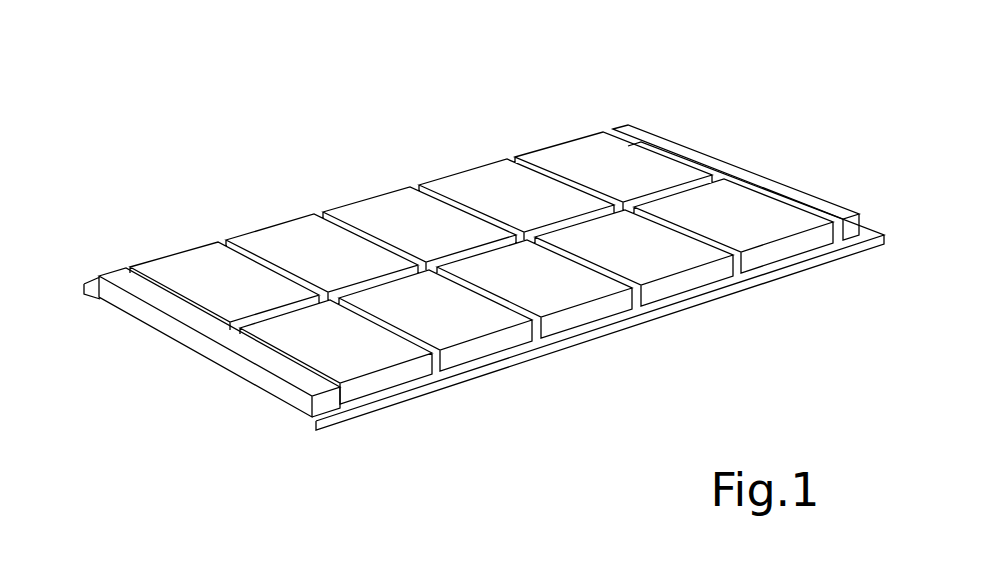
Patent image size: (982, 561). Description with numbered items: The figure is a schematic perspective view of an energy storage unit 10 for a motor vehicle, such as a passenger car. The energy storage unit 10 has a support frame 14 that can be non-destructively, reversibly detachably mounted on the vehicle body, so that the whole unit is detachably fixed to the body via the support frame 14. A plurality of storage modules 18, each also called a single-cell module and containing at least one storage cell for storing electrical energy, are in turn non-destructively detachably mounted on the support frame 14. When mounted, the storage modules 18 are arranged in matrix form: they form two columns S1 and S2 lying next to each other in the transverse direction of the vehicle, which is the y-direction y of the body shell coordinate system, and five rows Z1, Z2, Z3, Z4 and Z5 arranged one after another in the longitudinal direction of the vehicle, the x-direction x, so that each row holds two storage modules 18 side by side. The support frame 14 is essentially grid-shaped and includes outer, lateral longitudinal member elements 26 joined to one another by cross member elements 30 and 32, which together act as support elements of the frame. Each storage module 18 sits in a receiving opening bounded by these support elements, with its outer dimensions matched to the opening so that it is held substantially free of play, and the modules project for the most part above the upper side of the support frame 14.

The energy storage unit 10 is at (484, 269).
The support frame 14 is at (696, 156).
The storage modules 18 is at (370, 217).
The outer lateral longitudinal member elements 26 is at (463, 383).
The cross member element 30 is at (277, 380).
The cross member element 32 is at (838, 212).
The first column S1 is at (122, 320).
The second column S2 is at (237, 393).
The first row Z1 is at (407, 428).
The second row Z2 is at (510, 400).
The third row Z3 is at (590, 355).
The fourth row Z4 is at (705, 328).
The fifth row Z5 is at (803, 287).
The x-direction x is at (480, 48).
The y-direction y is at (50, 420).